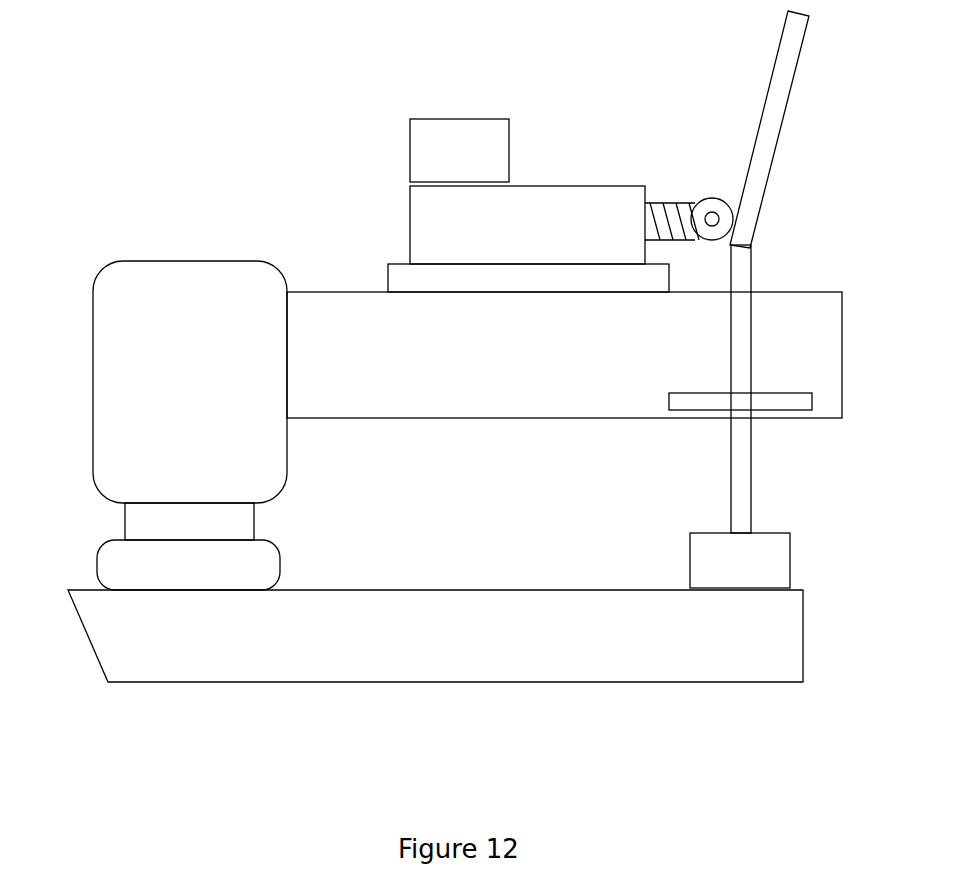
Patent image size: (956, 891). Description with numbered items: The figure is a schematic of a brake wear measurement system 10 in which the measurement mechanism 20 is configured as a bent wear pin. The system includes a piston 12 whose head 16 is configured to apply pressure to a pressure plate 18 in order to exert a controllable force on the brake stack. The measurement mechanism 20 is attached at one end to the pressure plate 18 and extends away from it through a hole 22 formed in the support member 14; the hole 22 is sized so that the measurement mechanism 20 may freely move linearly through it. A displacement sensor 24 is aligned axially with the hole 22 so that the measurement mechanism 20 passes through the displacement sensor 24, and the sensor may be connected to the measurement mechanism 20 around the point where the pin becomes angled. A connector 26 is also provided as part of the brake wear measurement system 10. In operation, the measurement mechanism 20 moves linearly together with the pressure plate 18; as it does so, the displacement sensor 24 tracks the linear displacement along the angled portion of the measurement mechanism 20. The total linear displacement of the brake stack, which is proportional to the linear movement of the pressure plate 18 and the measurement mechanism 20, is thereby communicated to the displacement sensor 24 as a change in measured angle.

The brake wear measurement system 10 is at (238, 95).
The piston 12 is at (163, 308).
The support member 14 is at (830, 310).
The head 16 is at (132, 560).
The pressure plate 18 is at (187, 682).
The measurement mechanism 20 is at (737, 477).
The hole 22 is at (730, 332).
The displacement sensor 24 is at (570, 205).
The connector 26 is at (479, 143).